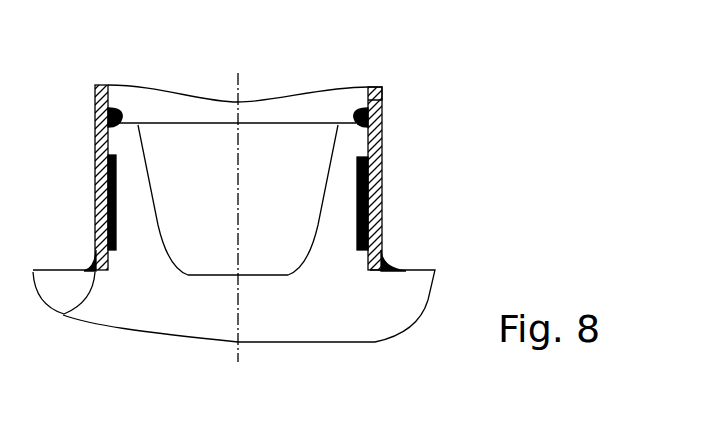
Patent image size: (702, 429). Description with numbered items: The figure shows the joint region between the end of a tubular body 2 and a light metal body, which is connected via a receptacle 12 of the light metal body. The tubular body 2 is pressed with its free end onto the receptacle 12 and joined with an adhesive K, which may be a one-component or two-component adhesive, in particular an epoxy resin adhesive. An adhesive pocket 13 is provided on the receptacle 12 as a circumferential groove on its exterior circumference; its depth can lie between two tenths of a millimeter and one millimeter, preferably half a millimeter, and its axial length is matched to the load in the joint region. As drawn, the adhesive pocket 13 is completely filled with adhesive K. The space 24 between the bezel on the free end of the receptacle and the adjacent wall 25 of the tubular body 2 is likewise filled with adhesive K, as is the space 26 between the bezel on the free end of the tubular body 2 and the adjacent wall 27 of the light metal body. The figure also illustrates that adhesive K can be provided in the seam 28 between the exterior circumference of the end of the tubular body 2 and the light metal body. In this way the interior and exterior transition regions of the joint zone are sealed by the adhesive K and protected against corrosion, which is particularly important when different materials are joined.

The tubular body 2 is at (383, 90).
The adjacent wall of the tubular body 25 is at (366, 93).
The space 24 is at (383, 122).
The adhesive K is at (118, 115).
The adhesive pocket 13 is at (116, 205).
The receptacle 12 is at (330, 247).
The adjacent wall of the light metal body 27 is at (64, 314).
The space 26 is at (368, 273).
The seam 28 is at (396, 268).